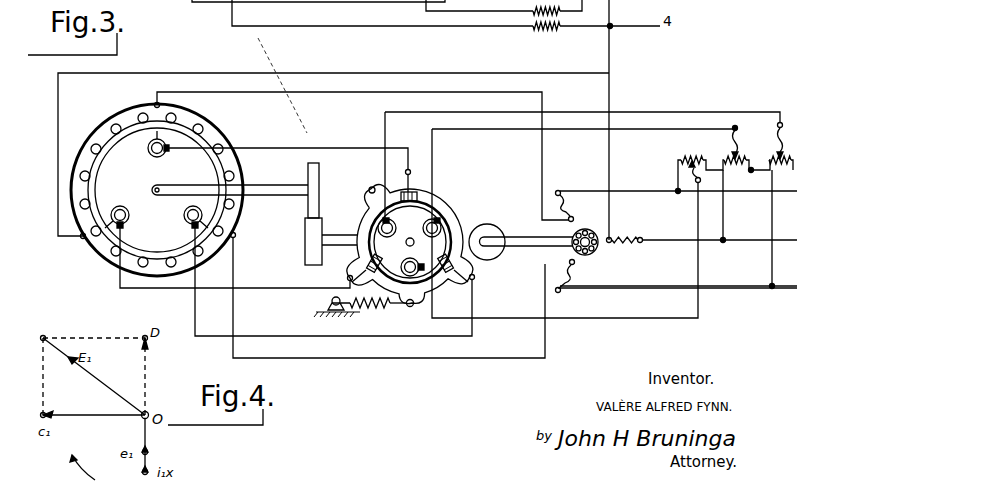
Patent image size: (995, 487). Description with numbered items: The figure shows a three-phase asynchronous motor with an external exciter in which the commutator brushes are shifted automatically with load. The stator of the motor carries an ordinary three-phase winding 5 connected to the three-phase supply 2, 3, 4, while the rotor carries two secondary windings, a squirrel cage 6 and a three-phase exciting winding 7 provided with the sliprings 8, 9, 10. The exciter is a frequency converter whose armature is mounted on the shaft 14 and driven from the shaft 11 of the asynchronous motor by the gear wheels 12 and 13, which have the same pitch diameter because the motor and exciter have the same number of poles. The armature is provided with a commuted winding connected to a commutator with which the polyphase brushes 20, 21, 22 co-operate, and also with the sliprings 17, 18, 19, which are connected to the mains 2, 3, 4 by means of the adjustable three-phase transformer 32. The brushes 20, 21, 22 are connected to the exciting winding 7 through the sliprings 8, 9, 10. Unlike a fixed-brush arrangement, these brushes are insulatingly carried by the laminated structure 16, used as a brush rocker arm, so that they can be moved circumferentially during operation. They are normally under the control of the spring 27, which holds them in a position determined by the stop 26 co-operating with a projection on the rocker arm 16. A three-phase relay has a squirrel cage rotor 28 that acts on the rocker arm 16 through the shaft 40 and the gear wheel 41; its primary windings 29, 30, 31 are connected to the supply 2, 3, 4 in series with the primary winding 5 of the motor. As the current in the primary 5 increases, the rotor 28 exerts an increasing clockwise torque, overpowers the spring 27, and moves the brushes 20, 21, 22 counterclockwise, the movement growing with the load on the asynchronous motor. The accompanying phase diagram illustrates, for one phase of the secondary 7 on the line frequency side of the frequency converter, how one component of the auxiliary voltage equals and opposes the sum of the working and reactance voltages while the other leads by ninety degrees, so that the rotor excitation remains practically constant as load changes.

The three-phase supply 2 is at (683, 192).
The three-phase supply 3 is at (724, 241).
The three-phase supply 4 is at (683, 287).
The three-phase winding 5 is at (118, 117).
The squirrel cage 6 is at (200, 130).
The three-phase winding 7 is at (105, 152).
The slipring 8 is at (148, 144).
The slipring 9 is at (114, 211).
The slipring 10 is at (189, 223).
The shaft 11 is at (256, 189).
The gear wheel 12 is at (318, 176).
The gear wheel 13 is at (305, 254).
The shaft 14 is at (336, 243).
The laminated structure 16 is at (461, 208).
The slipring 17 is at (425, 224).
The slipring 18 is at (385, 234).
The slipring 19 is at (414, 263).
The commutator brush 20 is at (364, 266).
The commutator brush 21 is at (419, 196).
The commutator brush 22 is at (447, 271).
The stop 26 is at (372, 186).
The spring 27 is at (364, 315).
The squirrel cage rotor 28 is at (600, 250).
The primary winding 29 is at (576, 276).
The primary winding 30 is at (576, 206).
The primary winding 31 is at (625, 231).
The three-phase transformer 32 is at (736, 150).
The shaft 40 is at (521, 237).
The gear wheel 41 is at (491, 255).